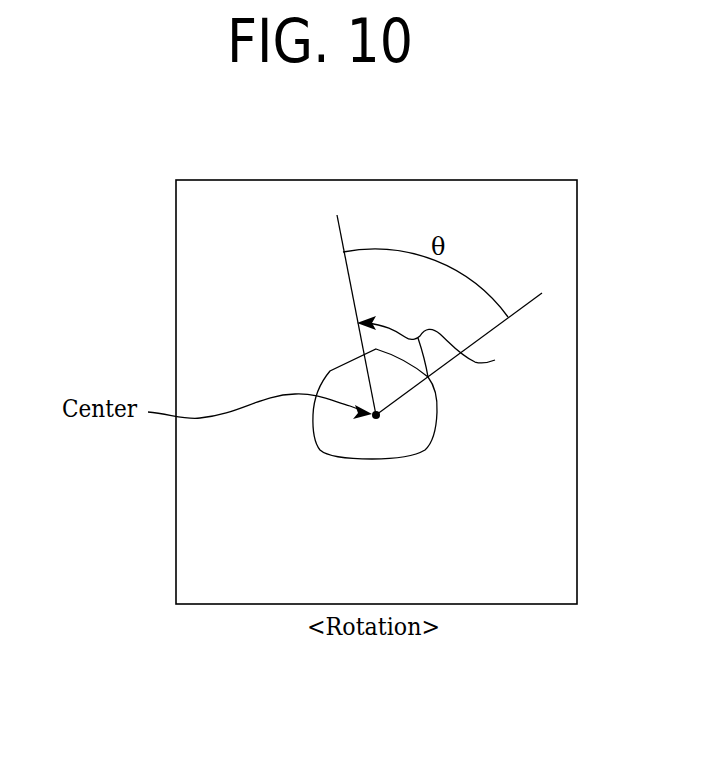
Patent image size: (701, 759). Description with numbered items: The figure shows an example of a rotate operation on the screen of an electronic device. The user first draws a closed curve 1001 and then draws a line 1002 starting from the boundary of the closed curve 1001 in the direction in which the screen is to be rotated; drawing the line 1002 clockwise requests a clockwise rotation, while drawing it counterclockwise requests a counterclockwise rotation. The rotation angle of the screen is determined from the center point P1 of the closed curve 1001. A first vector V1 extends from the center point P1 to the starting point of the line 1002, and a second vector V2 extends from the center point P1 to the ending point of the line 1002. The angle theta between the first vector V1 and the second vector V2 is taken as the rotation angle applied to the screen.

The closed curve 1001 is at (377, 460).
The line 1002 is at (457, 346).
The first vector V1 is at (466, 354).
The second vector V2 is at (336, 312).
The center point P1 is at (376, 434).